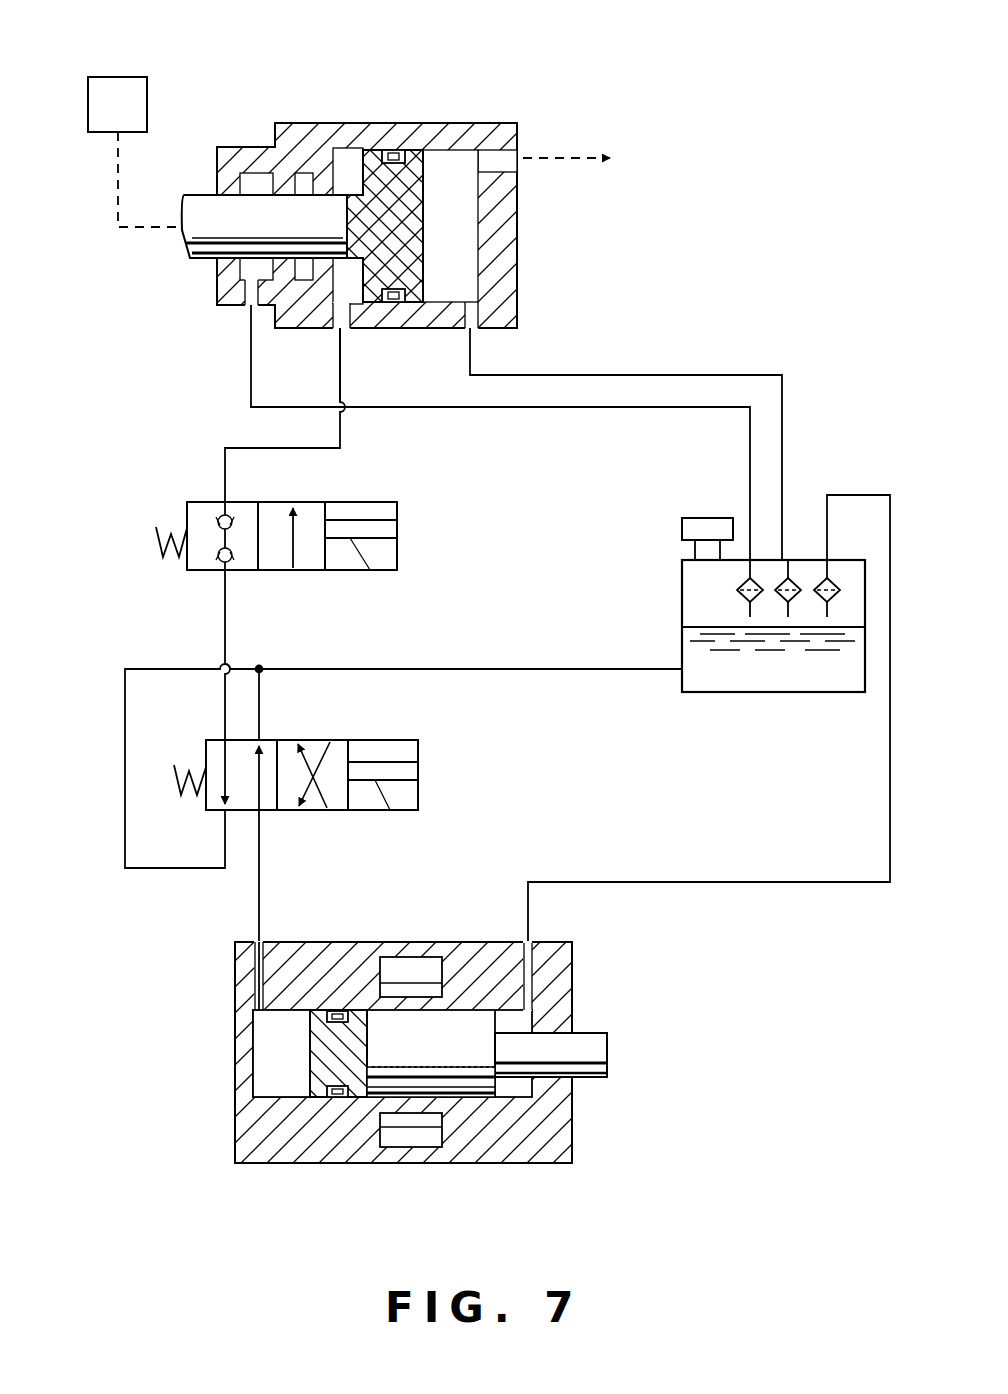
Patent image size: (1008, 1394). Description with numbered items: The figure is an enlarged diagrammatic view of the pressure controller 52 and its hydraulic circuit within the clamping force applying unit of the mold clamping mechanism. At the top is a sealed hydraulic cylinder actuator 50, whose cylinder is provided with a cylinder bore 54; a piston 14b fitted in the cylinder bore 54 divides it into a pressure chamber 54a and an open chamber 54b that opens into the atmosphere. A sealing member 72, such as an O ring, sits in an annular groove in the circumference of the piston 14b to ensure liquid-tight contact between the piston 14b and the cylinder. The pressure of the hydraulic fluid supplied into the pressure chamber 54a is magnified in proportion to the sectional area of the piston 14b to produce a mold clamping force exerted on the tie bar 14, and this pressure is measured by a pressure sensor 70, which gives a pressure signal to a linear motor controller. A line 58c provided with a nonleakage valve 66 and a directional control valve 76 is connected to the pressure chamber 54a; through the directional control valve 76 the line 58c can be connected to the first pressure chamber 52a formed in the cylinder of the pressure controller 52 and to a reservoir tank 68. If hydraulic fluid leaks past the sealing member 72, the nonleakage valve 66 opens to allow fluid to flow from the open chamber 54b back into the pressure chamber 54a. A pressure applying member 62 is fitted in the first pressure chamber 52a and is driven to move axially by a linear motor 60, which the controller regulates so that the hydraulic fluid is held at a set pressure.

The pressure sensor 70 is at (115, 83).
The sealed hydraulic cylinder actuator 50 is at (507, 115).
The pressure chamber 54a is at (343, 157).
The open chamber 54b is at (453, 228).
The cylinder bore 54 is at (433, 182).
The sealing member 72 is at (392, 153).
The tie bar 14 is at (207, 248).
The piston 14b is at (433, 265).
The line 58c is at (238, 448).
The nonleakage valve 66 is at (380, 497).
The directional control valve 76 is at (402, 735).
The reservoir tank 68 is at (765, 693).
The pressure controller 52 is at (580, 970).
The first pressure chamber 52a is at (270, 1049).
The linear motor 60 is at (395, 1140).
The pressure applying member 62 is at (478, 1108).